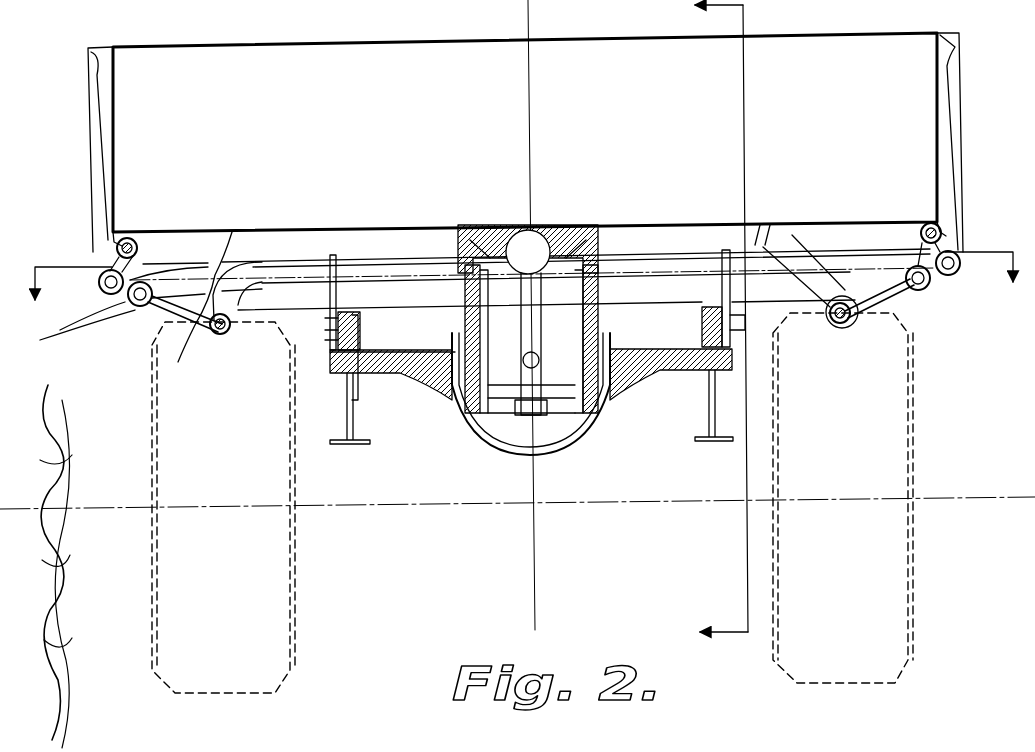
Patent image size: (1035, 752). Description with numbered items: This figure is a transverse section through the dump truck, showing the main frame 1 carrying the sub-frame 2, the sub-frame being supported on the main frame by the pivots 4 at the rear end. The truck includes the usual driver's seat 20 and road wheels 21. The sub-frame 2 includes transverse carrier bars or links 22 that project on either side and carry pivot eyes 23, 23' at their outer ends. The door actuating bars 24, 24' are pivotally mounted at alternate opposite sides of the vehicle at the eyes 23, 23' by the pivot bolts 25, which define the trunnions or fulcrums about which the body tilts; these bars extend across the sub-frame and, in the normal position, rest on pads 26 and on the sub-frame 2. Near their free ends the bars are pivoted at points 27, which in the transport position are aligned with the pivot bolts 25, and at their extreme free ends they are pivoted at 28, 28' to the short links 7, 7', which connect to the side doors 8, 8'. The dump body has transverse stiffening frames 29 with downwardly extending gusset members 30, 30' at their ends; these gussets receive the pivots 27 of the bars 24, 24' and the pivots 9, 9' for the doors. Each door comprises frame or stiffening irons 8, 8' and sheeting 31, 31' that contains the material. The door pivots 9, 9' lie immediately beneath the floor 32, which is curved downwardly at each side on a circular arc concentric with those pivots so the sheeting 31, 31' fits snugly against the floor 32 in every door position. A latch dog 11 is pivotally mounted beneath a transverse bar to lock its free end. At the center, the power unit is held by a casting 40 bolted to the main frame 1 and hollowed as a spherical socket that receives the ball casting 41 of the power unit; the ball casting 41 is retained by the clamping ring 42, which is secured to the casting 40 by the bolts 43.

The main frame 1 is at (325, 430).
The sub-frame 2 is at (325, 325).
The pivots 4 is at (516, 262).
The short link 7 is at (968, 287).
The short link 7' is at (11, 337).
The side door 8 is at (957, 201).
The side door 8' is at (94, 283).
The door pivot 9 is at (955, 214).
The door pivot 9' is at (149, 247).
The latch dog 11 is at (744, 262).
The driver's seat 20 is at (900, 240).
The road wheels 21 is at (262, 610).
The transverse carrier bar 22 is at (300, 345).
The pivot eye 23 is at (228, 318).
The pivot eye 23' is at (816, 368).
The door actuating bar 24 is at (494, 301).
The door actuating bar 24' is at (798, 227).
The pivot bolt 25 is at (220, 334).
The pad 26 is at (335, 270).
The pivotal point 27 is at (835, 270).
The pivot 28 is at (918, 278).
The pivot 28' is at (95, 312).
The transverse stiffening frame 29 is at (655, 235).
The gusset member 30 is at (893, 307).
The gusset member 30' is at (131, 335).
The door sheeting 31 is at (538, 142).
The door sheeting 31' is at (136, 149).
The floor 32 is at (450, 228).
The casting 40 is at (410, 372).
The ball casting 41 is at (531, 408).
The clamping ring 42 is at (370, 350).
The bolts 43 is at (605, 338).